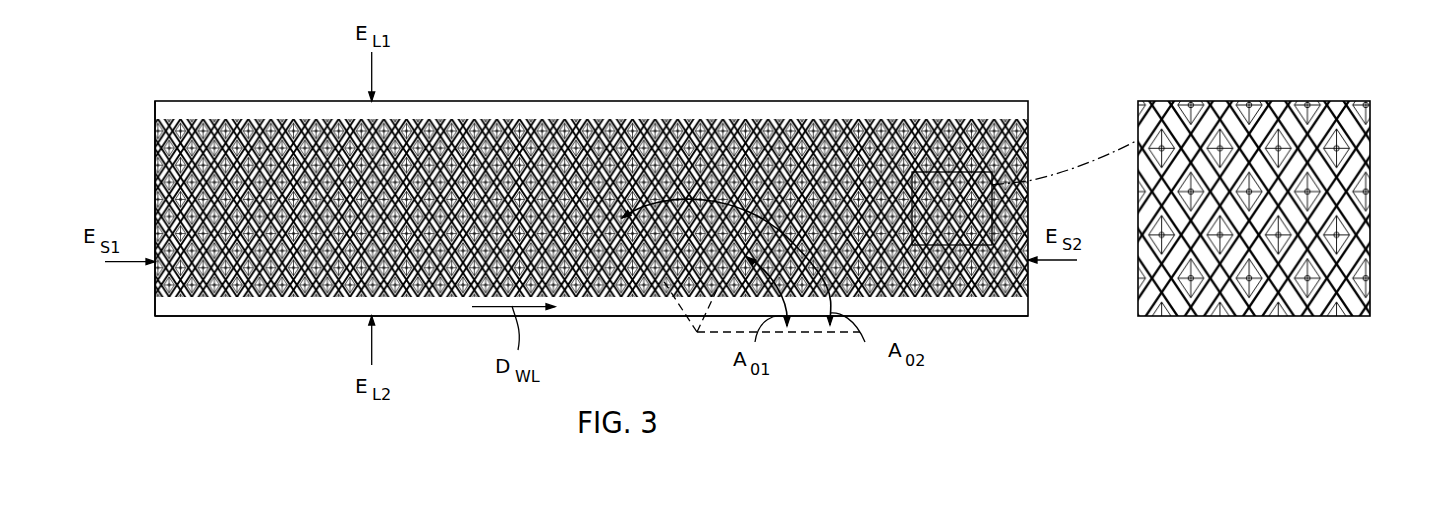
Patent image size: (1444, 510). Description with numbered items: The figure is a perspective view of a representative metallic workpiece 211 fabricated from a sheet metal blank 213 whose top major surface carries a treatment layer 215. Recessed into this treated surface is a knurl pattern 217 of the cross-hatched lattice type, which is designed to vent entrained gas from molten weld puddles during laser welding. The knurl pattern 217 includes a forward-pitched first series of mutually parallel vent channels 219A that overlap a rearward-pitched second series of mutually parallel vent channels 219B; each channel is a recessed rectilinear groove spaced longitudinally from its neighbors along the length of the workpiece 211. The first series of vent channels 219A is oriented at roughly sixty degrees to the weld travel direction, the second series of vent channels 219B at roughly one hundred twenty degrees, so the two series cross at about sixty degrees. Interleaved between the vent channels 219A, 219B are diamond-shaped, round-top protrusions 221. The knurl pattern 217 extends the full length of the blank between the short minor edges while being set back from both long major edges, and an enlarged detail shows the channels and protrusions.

The workpiece 211 is at (183, 62).
The sheet metal blank 213 is at (155, 290).
The treatment layer 215 is at (217, 305).
The knurl pattern 217 is at (322, 150).
The first series of vent channels 219A is at (1328, 302).
The second series of vent channels 219B is at (1363, 121).
The diamond-shaped round-top protrusions 221 is at (1340, 243).